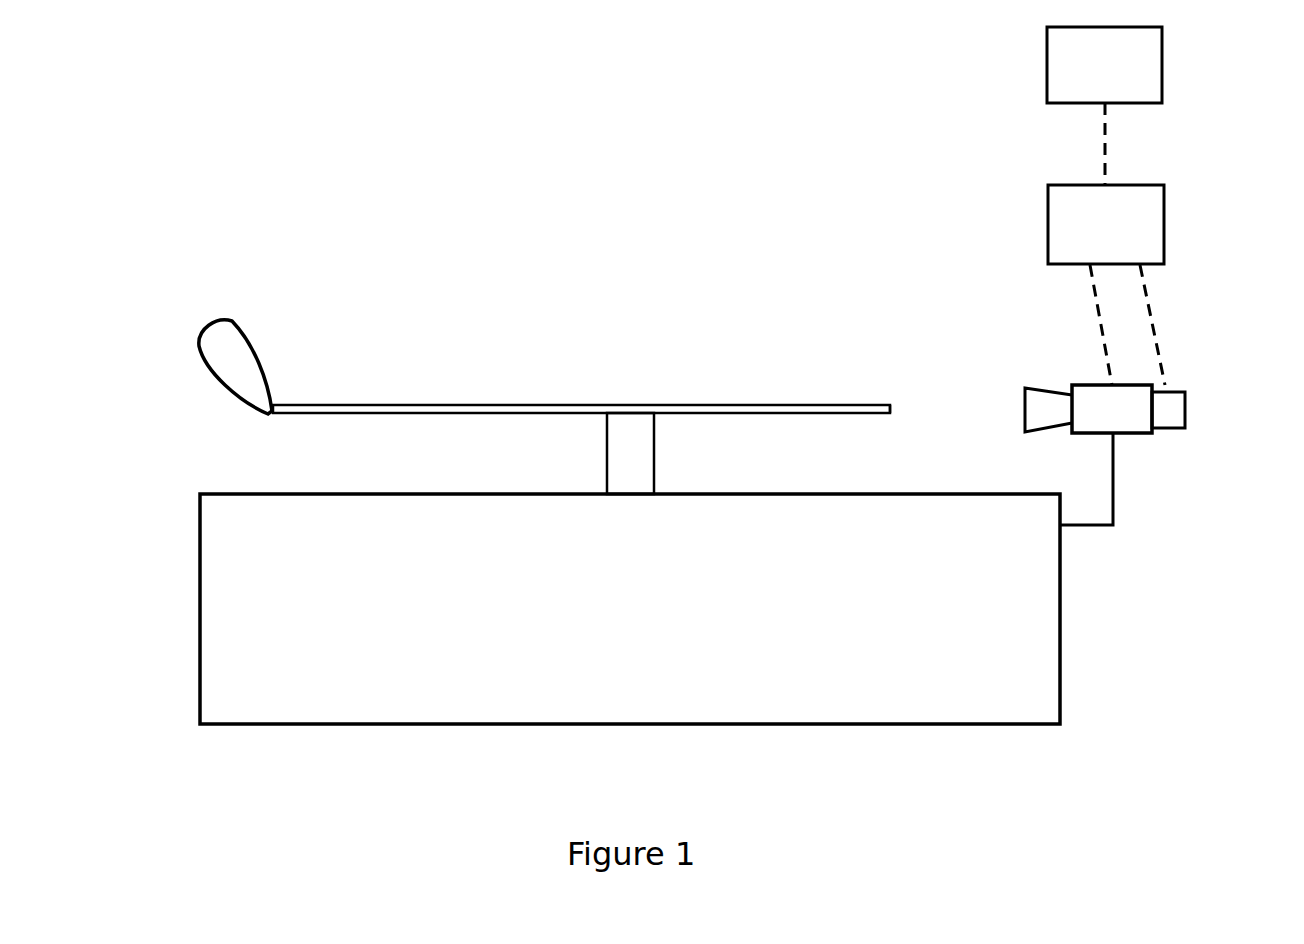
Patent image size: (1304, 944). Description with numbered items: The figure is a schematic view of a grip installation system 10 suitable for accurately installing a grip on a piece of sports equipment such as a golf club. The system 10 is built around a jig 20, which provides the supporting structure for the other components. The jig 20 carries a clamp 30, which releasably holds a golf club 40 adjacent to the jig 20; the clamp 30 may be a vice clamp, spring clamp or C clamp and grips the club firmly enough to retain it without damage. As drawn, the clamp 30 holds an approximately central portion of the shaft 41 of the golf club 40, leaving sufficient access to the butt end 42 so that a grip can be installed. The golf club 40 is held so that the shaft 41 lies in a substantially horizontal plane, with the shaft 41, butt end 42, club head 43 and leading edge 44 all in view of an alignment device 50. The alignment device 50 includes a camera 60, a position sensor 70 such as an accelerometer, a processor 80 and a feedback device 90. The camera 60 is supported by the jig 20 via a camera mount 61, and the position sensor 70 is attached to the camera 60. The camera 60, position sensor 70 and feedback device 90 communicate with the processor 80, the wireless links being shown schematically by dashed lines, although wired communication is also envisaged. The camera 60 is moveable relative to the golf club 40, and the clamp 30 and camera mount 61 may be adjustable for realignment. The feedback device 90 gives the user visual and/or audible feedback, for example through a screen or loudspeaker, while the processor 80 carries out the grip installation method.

The grip installation system 10 is at (266, 173).
The jig 20 is at (233, 727).
The clamp 30 is at (606, 458).
The golf club 40 is at (581, 368).
The shaft 41 is at (710, 412).
The butt end 42 is at (864, 412).
The club head 43 is at (237, 362).
The leading edge 44 is at (228, 385).
The alignment device 50 is at (951, 238).
The camera 60 is at (1132, 434).
The camera mount 61 is at (1107, 528).
The position sensor 70 is at (1176, 429).
The processor 80 is at (1106, 285).
The feedback device 90 is at (1104, 106).